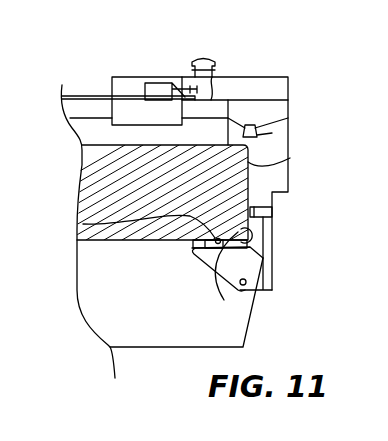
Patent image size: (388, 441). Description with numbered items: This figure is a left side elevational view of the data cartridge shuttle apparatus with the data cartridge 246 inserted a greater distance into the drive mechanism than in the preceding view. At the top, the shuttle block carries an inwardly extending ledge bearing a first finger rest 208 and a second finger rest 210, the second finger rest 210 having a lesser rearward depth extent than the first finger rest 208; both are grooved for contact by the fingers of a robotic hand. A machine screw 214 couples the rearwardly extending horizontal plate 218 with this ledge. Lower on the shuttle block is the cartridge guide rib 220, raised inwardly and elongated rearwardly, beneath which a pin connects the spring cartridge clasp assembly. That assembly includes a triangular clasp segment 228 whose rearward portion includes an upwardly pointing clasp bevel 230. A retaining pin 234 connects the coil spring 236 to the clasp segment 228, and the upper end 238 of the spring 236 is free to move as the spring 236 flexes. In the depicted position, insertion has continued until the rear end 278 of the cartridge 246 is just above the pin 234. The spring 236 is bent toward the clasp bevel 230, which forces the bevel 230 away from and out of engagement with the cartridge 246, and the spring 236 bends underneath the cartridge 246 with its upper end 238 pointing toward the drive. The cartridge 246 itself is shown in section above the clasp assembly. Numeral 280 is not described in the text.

The first finger rest 208 is at (273, 82).
The second finger rest 210 is at (200, 80).
The machine screw 214 is at (215, 63).
The horizontal plate 218 is at (80, 97).
The cartridge guide rib 220 is at (272, 212).
The clasp segment 228 is at (230, 305).
The clasp bevel 230 is at (208, 243).
The retaining pin 234 is at (272, 290).
The coil spring 236 is at (218, 292).
The upper end 238 is at (203, 266).
The data cartridge 246 is at (120, 172).
The rear end 278 is at (290, 158).
The spring portion 280 is at (83, 224).